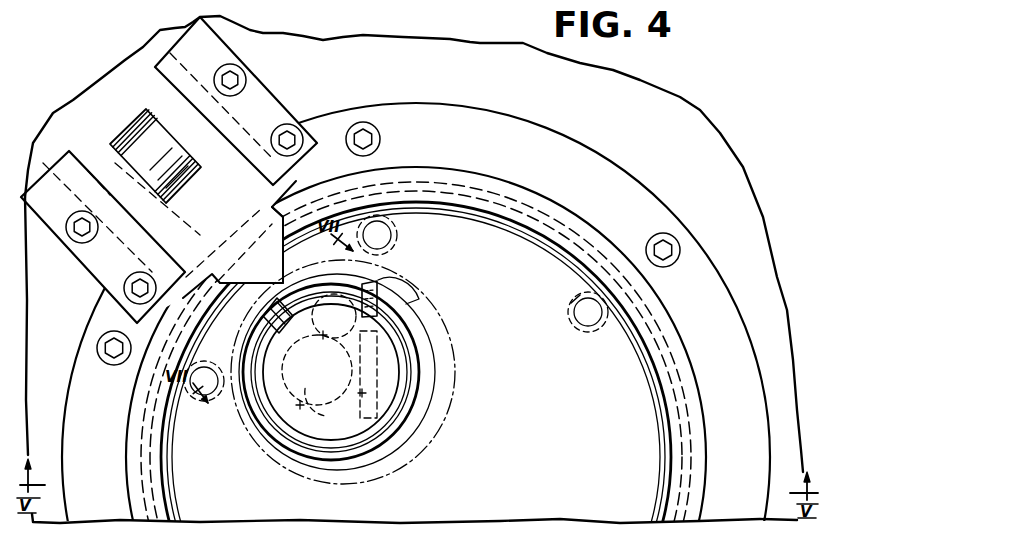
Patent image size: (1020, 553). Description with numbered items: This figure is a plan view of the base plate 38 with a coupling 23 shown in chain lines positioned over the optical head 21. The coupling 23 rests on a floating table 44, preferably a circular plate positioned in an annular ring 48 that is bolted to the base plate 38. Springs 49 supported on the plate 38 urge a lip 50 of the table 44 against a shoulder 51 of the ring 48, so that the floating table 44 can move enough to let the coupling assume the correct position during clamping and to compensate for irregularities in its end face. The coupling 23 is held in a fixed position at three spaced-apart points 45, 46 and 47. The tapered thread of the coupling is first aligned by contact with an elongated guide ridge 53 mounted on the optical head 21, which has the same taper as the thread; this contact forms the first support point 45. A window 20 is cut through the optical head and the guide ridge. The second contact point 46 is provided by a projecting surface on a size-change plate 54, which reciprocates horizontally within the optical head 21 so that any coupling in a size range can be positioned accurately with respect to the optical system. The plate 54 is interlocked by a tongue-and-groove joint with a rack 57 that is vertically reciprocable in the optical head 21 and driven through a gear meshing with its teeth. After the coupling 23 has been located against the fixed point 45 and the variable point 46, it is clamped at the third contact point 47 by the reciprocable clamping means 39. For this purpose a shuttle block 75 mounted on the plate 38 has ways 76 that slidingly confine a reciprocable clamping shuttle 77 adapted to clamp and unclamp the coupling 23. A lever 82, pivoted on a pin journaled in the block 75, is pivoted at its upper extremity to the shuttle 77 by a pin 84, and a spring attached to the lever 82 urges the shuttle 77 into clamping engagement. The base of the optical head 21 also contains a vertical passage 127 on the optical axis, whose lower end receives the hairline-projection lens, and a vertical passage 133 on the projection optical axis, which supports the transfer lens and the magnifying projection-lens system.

The window 20 is at (280, 300).
The optical head 21 is at (395, 422).
The coupling 23 is at (457, 395).
The base plate 38 is at (739, 183).
The reciprocable clamping means 39 is at (83, 120).
The floating table 44 is at (548, 445).
The first support point 45 is at (320, 336).
The second contact point 46 is at (376, 282).
The contact point 47 is at (280, 281).
The annular ring 48 is at (723, 300).
The springs 49 is at (398, 239).
The lip 50 is at (672, 413).
The shoulder 51 is at (681, 389).
The guide ridge 53 is at (262, 312).
The size-change plate 54 is at (413, 299).
The rack 57 is at (362, 394).
The shuttle block 75 is at (59, 240).
The ways 76 is at (263, 103).
The clamping shuttle 77 is at (206, 235).
The lever 82 is at (178, 181).
The pin 84 is at (191, 132).
The vertical passage 127 is at (317, 370).
The vertical passage 133 is at (300, 406).